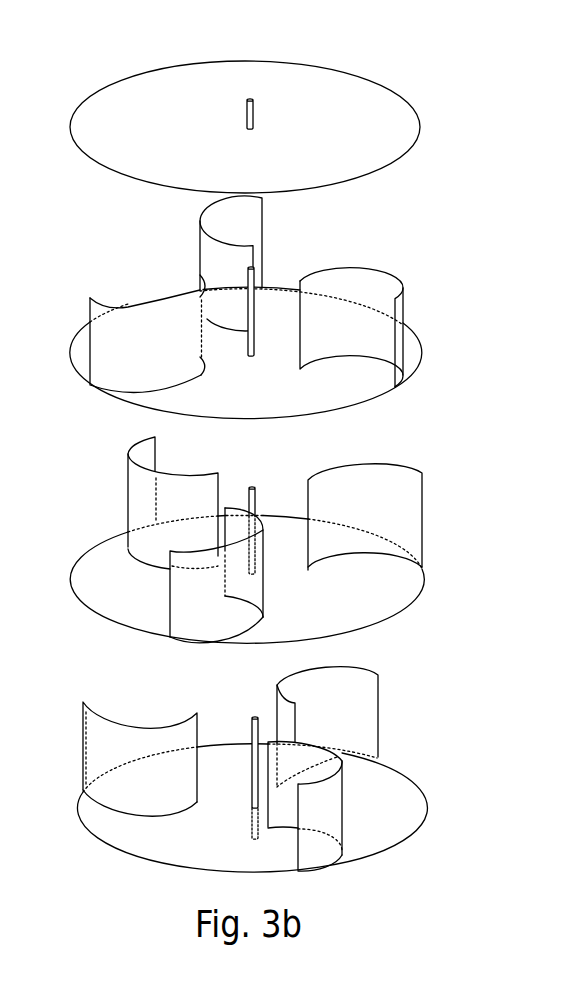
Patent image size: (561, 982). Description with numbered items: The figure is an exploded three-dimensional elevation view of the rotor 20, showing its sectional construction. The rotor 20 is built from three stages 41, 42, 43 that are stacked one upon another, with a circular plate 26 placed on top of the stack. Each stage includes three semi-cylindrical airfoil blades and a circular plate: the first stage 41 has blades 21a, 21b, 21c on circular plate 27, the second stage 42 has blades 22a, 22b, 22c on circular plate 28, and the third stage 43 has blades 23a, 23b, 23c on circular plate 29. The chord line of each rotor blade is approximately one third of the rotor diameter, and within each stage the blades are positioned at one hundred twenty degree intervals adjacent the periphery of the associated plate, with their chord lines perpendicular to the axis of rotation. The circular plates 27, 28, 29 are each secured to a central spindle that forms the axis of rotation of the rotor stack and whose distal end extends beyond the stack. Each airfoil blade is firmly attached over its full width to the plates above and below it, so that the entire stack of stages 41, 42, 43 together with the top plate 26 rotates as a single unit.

The rotor 20 is at (237, 43).
The circular plate 26 is at (393, 163).
The circular plate 27 is at (380, 395).
The circular plate 28 is at (393, 620).
The circular plate 29 is at (397, 847).
The stage 41 is at (58, 312).
The stage 42 is at (58, 552).
The stage 43 is at (58, 760).
The semi-cylindrical airfoil blade 21a is at (403, 303).
The semi-cylindrical airfoil blade 21b is at (198, 246).
The semi-cylindrical airfoil blade 21c is at (207, 343).
The semi-cylindrical airfoil blade 22a is at (422, 500).
The semi-cylindrical airfoil blade 22b is at (128, 490).
The semi-cylindrical airfoil blade 22c is at (170, 602).
The semi-cylindrical airfoil blade 23a is at (378, 715).
The semi-cylindrical airfoil blade 23b is at (197, 775).
The semi-cylindrical airfoil blade 23c is at (342, 800).